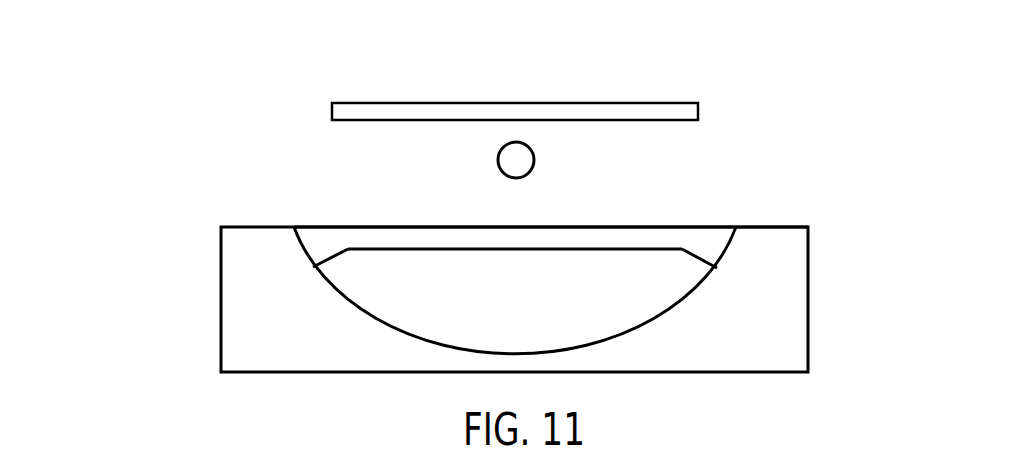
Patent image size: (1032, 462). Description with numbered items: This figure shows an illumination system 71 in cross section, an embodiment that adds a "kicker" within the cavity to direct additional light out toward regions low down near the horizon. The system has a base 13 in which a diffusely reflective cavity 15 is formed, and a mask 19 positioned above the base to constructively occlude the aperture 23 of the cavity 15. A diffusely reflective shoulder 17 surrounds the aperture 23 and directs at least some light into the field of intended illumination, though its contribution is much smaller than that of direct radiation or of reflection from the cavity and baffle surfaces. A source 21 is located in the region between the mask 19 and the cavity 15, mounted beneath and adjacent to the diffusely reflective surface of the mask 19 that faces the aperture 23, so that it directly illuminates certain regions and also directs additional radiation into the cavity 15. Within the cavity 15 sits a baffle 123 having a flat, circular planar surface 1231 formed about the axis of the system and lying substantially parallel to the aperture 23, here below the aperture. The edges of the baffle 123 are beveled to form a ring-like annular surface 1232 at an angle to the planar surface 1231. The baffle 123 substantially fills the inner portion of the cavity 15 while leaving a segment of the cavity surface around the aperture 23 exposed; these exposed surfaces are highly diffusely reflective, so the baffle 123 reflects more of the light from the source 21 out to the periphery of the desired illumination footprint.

The illumination system 71 is at (150, 85).
The base 13 is at (568, 299).
The diffusely reflective cavity 15 is at (730, 252).
The diffusely reflective shoulder 17 is at (817, 201).
The aperture 23 is at (479, 129).
The baffle 123 is at (258, 203).
The planar surface 1231 is at (515, 215).
The annular surface 1232 is at (700, 253).
The mask 19 is at (542, 78).
The source 21 is at (561, 107).